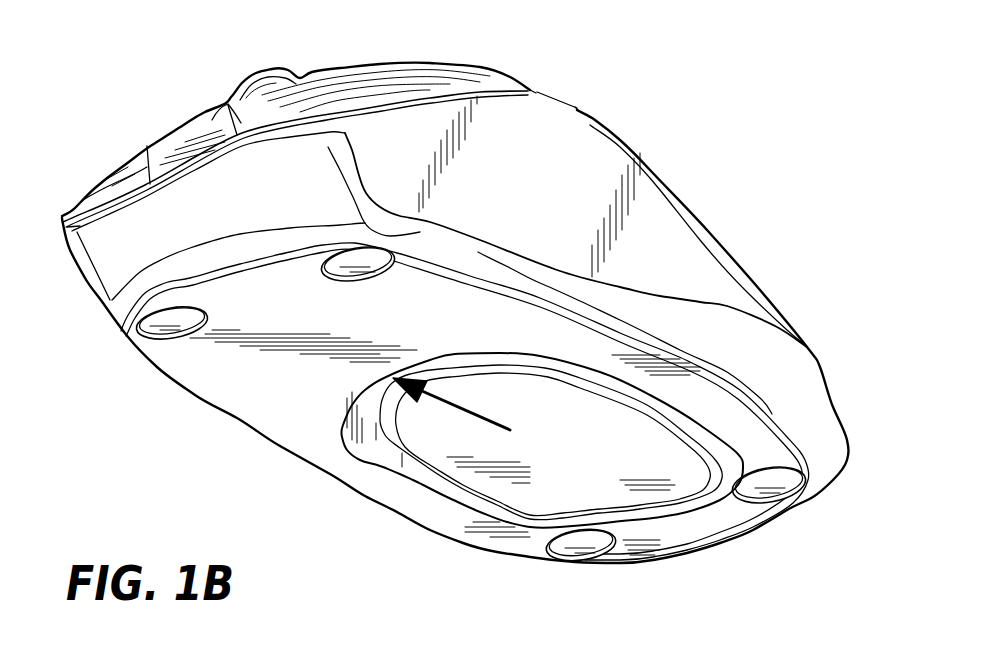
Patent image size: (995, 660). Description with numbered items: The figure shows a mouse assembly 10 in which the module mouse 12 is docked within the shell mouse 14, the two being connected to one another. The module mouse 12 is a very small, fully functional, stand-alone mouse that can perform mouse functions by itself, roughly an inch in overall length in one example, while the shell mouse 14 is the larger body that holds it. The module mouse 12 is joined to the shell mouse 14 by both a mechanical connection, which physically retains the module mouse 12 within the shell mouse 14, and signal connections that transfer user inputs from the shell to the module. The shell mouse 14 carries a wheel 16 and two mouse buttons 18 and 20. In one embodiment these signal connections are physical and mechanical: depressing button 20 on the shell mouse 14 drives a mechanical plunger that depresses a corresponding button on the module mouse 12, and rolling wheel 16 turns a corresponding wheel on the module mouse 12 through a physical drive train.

The mouse assembly 10 is at (743, 83).
The module mouse 12 is at (655, 477).
The shell mouse 14 is at (737, 262).
The wheel 16 is at (257, 82).
The mouse button 18 is at (357, 72).
The mouse button 20 is at (122, 165).